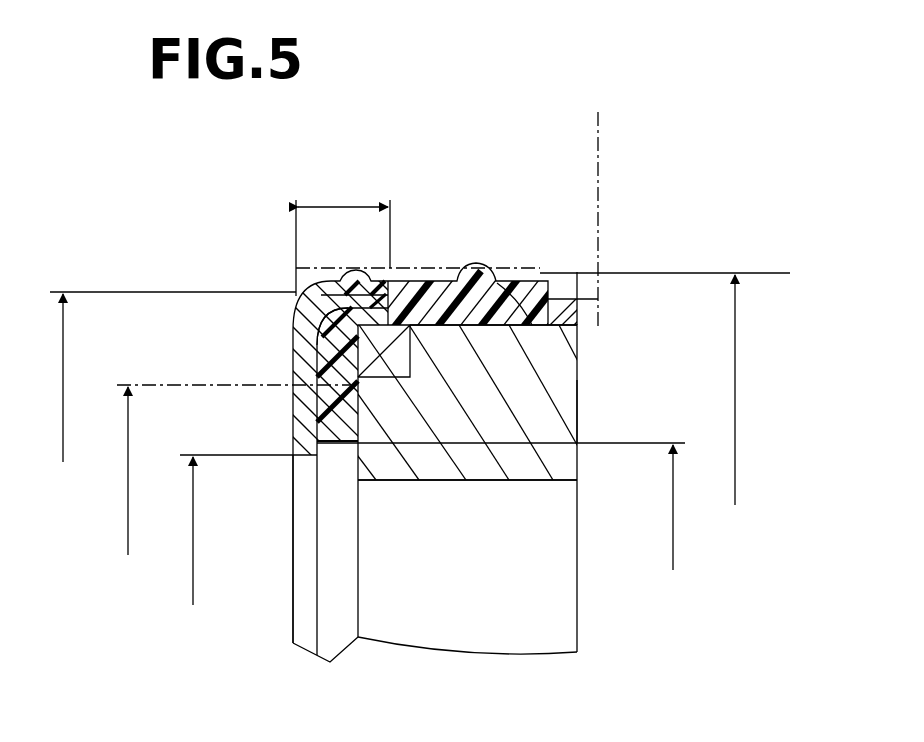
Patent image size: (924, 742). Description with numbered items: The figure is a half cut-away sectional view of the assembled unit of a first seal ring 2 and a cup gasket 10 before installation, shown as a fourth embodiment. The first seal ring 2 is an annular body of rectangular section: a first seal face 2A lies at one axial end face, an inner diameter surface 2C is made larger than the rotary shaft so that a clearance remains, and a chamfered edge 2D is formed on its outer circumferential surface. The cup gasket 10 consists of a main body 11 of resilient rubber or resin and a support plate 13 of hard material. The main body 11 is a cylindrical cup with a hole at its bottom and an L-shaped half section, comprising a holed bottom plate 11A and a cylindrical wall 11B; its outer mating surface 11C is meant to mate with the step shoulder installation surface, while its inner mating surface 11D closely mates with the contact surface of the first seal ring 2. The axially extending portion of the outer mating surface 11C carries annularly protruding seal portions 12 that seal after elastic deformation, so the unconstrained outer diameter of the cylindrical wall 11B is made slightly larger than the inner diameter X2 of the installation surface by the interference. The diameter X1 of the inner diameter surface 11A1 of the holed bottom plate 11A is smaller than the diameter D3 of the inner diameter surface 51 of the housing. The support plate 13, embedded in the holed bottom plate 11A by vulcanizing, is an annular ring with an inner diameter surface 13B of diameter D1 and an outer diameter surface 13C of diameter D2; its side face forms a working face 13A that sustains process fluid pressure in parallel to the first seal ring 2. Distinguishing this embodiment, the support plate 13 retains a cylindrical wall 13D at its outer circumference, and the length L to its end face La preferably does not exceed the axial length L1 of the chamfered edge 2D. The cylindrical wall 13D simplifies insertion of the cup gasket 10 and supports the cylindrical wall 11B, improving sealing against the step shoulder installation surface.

The first seal ring 2 is at (583, 346).
The first seal face 2A is at (580, 376).
The inner diameter surface 2C is at (533, 481).
The chamfered edge 2D is at (317, 321).
The cup gasket 10 is at (552, 264).
The main body 11 is at (301, 290).
The holed bottom plate 11A is at (356, 418).
The inner diameter surface 11A1 is at (617, 448).
The cylindrical wall 11B is at (560, 300).
The outer mating surface 11C is at (690, 273).
The inner mating surface 11D is at (473, 327).
The seal portions 12 is at (477, 266).
The support plate 13 is at (330, 385).
The working face 13A is at (356, 398).
The inner diameter surface 13B is at (296, 457).
The outer diameter surface 13C is at (228, 292).
The cylindrical wall 13D is at (340, 277).
The inner diameter surface 51 is at (254, 387).
The length L is at (343, 234).
The end face La is at (380, 270).
The axial length L1 is at (507, 285).
The diameter D1 is at (197, 547).
The diameter D2 is at (62, 397).
The diameter D3 is at (132, 487).
The diameter X1 is at (671, 524).
The inner diameter X2 is at (736, 409).